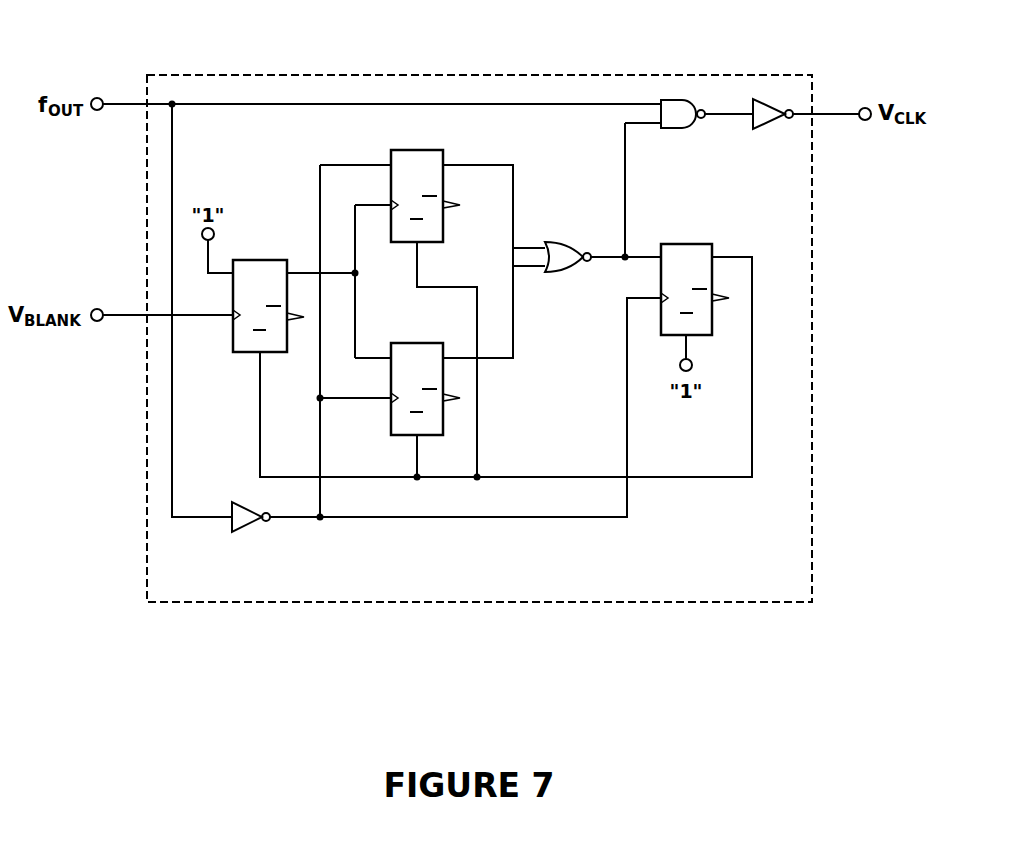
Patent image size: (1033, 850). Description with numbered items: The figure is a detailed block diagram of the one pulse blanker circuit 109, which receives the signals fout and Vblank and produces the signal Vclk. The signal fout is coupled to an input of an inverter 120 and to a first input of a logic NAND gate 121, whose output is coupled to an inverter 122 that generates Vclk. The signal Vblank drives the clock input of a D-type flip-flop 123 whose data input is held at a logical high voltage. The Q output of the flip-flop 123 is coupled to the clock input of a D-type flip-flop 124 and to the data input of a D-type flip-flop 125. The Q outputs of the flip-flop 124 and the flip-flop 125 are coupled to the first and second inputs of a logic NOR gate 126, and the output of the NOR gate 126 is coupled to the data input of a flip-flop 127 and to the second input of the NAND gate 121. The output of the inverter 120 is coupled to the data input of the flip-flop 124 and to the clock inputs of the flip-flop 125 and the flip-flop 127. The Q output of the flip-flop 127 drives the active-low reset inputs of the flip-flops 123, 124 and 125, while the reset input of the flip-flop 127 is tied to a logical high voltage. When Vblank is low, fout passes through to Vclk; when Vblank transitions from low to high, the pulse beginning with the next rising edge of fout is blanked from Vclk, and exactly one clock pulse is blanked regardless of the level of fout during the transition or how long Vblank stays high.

The one pulse blanker circuit 109 is at (475, 73).
The inverter 120 is at (250, 537).
The logic NAND gate 121 is at (671, 133).
The inverter 122 is at (769, 133).
The D-type flip-flop 123 is at (264, 252).
The D-type flip-flop 124 is at (397, 146).
The D-type flip-flop 125 is at (413, 340).
The logic NOR gate 126 is at (558, 276).
The flip-flop 127 is at (683, 239).